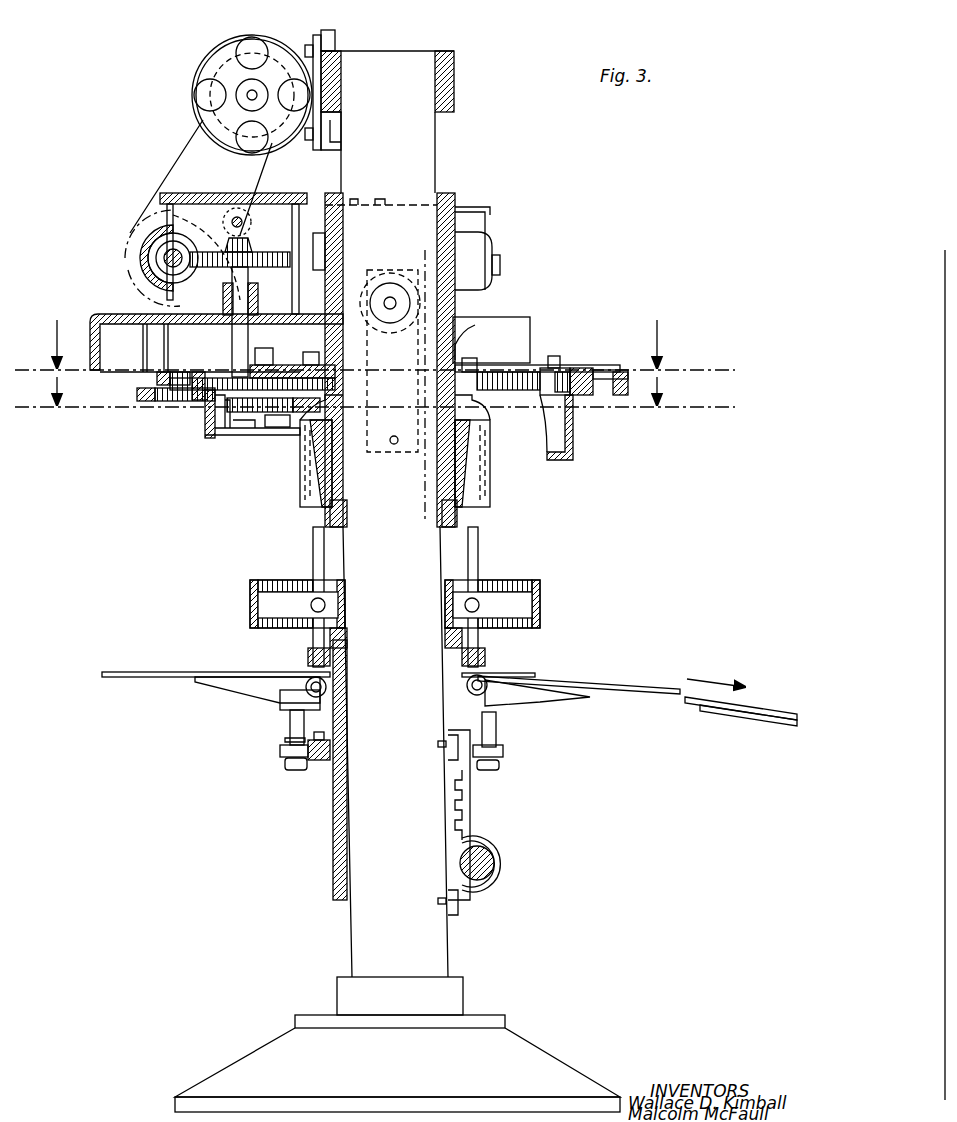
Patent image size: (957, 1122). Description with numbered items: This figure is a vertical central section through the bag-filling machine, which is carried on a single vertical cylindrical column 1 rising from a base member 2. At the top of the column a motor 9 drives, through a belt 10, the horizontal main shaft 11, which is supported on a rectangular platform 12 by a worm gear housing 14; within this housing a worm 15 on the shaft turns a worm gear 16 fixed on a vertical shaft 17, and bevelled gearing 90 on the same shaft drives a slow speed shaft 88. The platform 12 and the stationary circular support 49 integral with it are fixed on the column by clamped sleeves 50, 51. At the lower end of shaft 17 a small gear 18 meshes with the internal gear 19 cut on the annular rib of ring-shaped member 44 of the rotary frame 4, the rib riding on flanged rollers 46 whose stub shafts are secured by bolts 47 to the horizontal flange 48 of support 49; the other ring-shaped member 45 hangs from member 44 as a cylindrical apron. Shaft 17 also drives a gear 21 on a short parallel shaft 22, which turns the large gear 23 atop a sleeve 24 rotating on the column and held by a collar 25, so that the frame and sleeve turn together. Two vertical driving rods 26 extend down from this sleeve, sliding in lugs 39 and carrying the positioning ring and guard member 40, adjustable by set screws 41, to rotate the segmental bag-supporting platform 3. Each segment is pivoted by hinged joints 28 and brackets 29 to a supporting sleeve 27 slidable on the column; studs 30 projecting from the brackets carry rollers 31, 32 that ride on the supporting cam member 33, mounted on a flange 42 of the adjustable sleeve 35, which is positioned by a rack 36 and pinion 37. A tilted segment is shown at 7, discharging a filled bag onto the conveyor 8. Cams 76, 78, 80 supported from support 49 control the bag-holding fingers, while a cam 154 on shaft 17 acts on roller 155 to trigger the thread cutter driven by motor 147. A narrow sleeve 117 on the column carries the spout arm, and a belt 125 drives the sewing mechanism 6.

The vertical cylindrical column 1 is at (430, 164).
The base member 2 is at (252, 1052).
The bag-supporting platform 3 is at (134, 670).
The rotary frame 4 is at (203, 420).
The sewing mechanism 6 is at (376, 455).
The tilted platform segment position 7 is at (630, 694).
The conveyor 8 is at (748, 712).
The motor 9 is at (280, 48).
The belt 10 is at (182, 135).
The main shaft 11 is at (168, 256).
The rectangular platform 12 is at (110, 314).
The worm gear housing 14 is at (210, 194).
The worm 15 is at (165, 258).
The worm gear 16 is at (278, 268).
The vertical shaft 17 is at (232, 340).
The small gear 18 is at (222, 380).
The internal gear 19 is at (503, 372).
The gear 21 is at (285, 428).
The short parallel shaft 22 is at (280, 365).
The large gear 23 is at (547, 420).
The sleeve 24 is at (300, 488).
The collar 25 is at (458, 514).
The vertical driving rods 26 is at (313, 540).
The supporting sleeve 27 is at (347, 702).
The hinged joints 28 is at (310, 690).
The brackets 29 is at (240, 685).
The vertical studs 30 is at (290, 735).
The rollers 31 is at (282, 752).
The rollers 32 is at (292, 770).
The supporting cam member 33 is at (316, 762).
The adjustable sleeve 35 is at (333, 888).
The rack 36 is at (470, 818).
The pinion 37 is at (498, 860).
The lugs 39 is at (486, 650).
The positioning ring and guard member 40 is at (540, 586).
The set screws 41 is at (316, 600).
The flange 42 is at (284, 740).
The ring-shaped member 44 is at (198, 395).
The ring-shaped member 45 is at (210, 435).
The flanged rollers 46 is at (585, 368).
The bolts 47 is at (562, 366).
The horizontal flange 48 is at (555, 366).
The stationary circular support 49 is at (545, 320).
The sleeve 50 is at (465, 340).
The sleeve 51 is at (460, 360).
The cam 76 is at (628, 372).
The cam 78 is at (157, 378).
The cam 80 is at (137, 395).
The slow speed shaft 88 is at (250, 240).
The bevelled gearing 90 is at (245, 220).
The narrow sleeve 117 is at (458, 220).
The belt 125 is at (325, 250).
The driving motor 147 is at (497, 246).
The cam 154 is at (238, 432).
The roller 155 is at (275, 415).